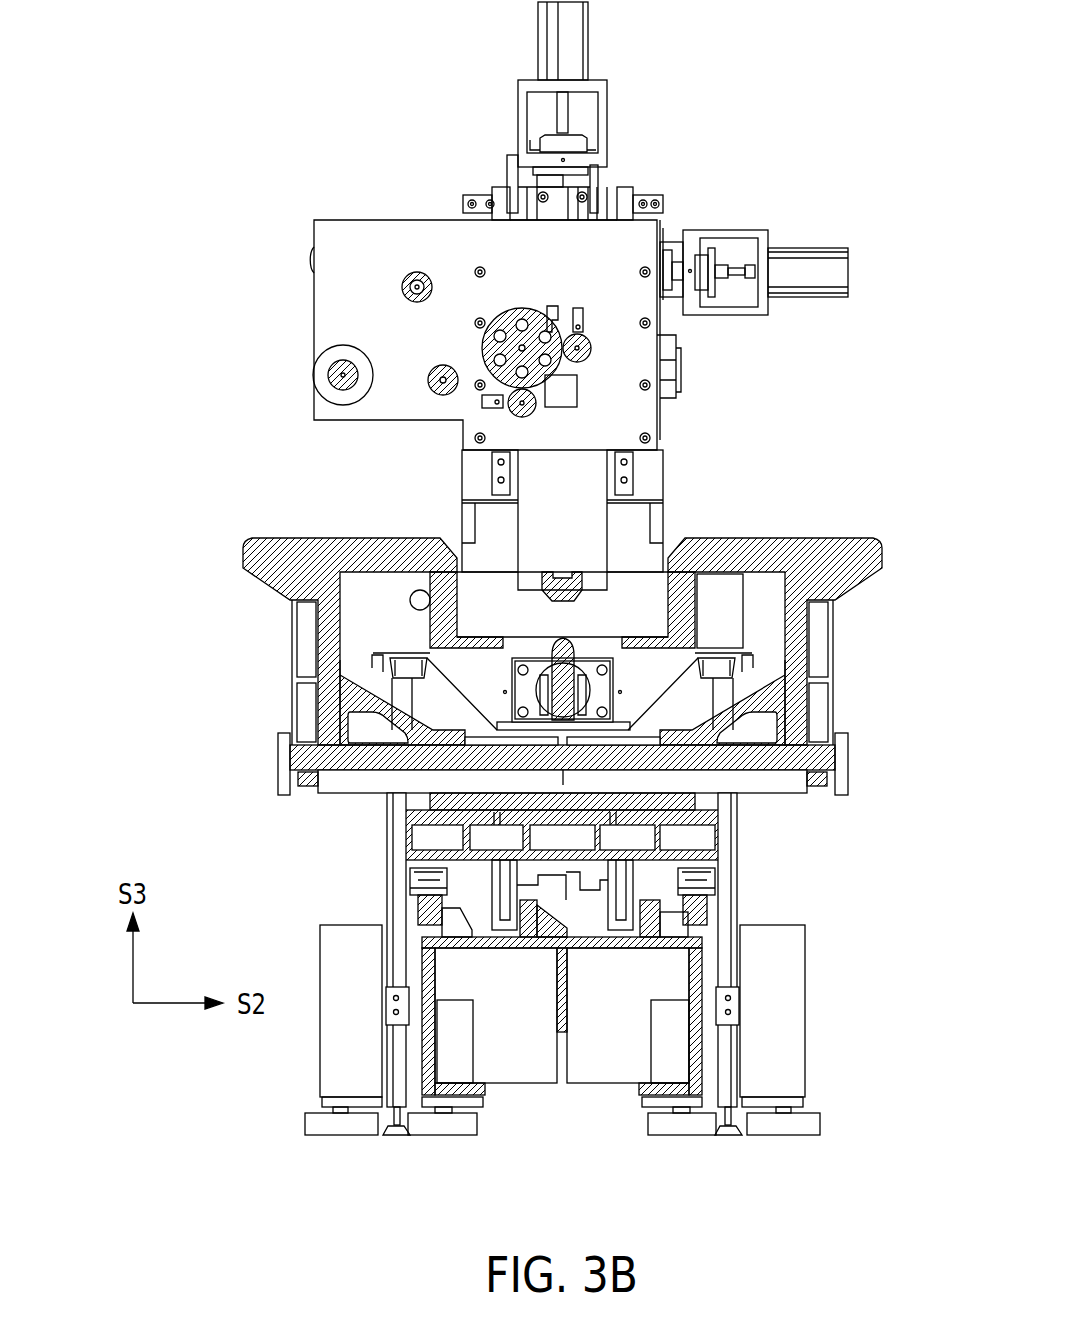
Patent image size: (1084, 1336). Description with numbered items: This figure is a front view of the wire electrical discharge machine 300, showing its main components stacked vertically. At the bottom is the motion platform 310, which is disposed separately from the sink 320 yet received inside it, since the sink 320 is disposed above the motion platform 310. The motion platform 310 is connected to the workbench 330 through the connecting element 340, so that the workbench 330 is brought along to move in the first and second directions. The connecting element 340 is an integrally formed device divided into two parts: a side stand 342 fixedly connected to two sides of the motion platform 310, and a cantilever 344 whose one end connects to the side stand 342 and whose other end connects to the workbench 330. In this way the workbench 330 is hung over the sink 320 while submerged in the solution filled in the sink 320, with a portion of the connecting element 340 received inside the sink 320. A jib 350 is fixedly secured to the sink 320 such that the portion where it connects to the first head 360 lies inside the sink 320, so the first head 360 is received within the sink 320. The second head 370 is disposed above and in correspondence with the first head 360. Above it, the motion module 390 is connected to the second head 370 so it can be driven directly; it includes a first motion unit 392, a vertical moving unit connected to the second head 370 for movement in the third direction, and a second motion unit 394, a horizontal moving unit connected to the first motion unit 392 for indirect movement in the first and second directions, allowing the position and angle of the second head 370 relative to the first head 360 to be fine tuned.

The wire electrical discharge machine 300 is at (747, 1208).
The motion platform 310 is at (750, 862).
The sink 320 is at (350, 628).
The workbench 330 is at (673, 648).
The connecting element 340 is at (397, 480).
The side stand 342 is at (328, 588).
The cantilever 344 is at (441, 582).
The jib 350 is at (540, 700).
The first head 360 is at (613, 665).
The second head 370 is at (563, 573).
The motion module 390 is at (765, 60).
The first motion unit 392 is at (598, 162).
The second motion unit 394 is at (692, 242).